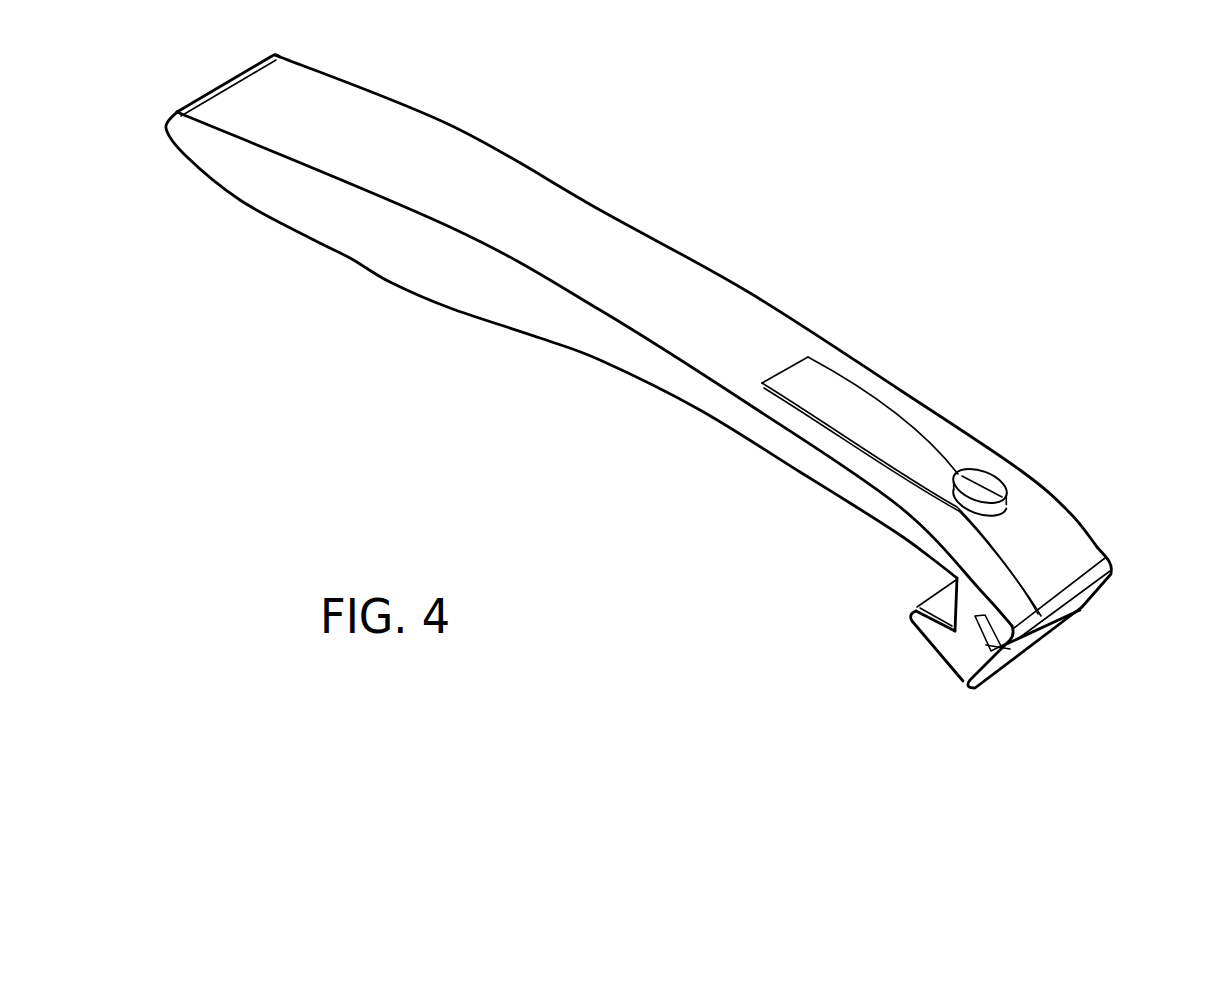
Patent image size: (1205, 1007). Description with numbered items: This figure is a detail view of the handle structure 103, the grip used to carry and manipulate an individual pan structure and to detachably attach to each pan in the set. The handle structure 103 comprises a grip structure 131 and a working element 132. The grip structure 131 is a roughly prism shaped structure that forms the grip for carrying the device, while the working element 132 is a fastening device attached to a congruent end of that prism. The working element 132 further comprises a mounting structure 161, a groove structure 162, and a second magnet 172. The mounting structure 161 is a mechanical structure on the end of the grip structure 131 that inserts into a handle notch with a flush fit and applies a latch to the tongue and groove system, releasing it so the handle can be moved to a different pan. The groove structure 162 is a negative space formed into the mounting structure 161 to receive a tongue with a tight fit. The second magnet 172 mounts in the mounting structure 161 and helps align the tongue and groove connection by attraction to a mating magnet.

The handle structure 103 is at (1036, 203).
The grip structure 131 is at (627, 238).
The working element 132 is at (747, 745).
The mounting structure 161 is at (961, 663).
The groove structure 162 is at (1012, 651).
The second magnet 172 is at (942, 604).